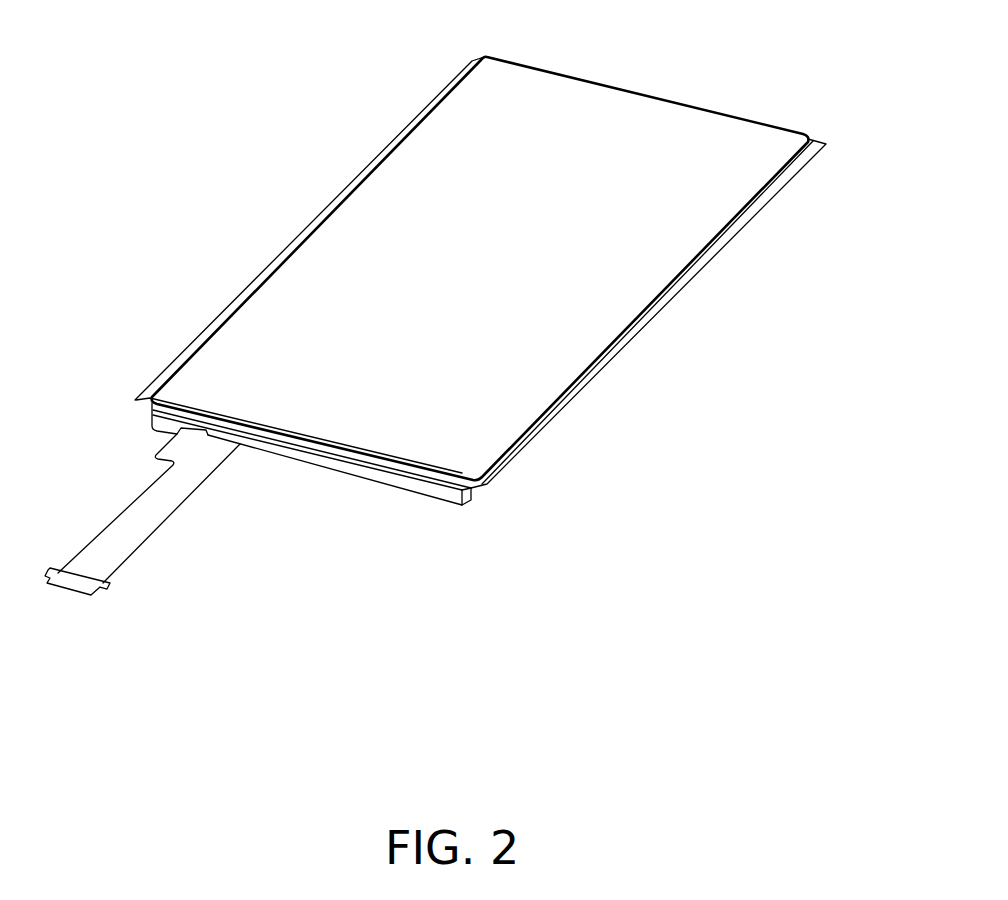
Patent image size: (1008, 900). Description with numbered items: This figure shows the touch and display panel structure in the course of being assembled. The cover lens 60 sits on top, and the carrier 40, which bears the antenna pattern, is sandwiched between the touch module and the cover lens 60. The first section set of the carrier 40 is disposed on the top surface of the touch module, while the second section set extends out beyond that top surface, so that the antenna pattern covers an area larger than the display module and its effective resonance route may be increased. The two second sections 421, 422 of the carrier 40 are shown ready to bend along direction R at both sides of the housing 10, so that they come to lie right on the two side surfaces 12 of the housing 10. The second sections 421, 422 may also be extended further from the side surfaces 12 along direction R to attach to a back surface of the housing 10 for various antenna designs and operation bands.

The cover lens 60 is at (622, 102).
The carrier 40 is at (510, 272).
The second section 421 is at (693, 277).
The second section 422 is at (315, 222).
The housing 10 is at (397, 480).
The side surface 12 is at (152, 413).
The direction R is at (233, 332).